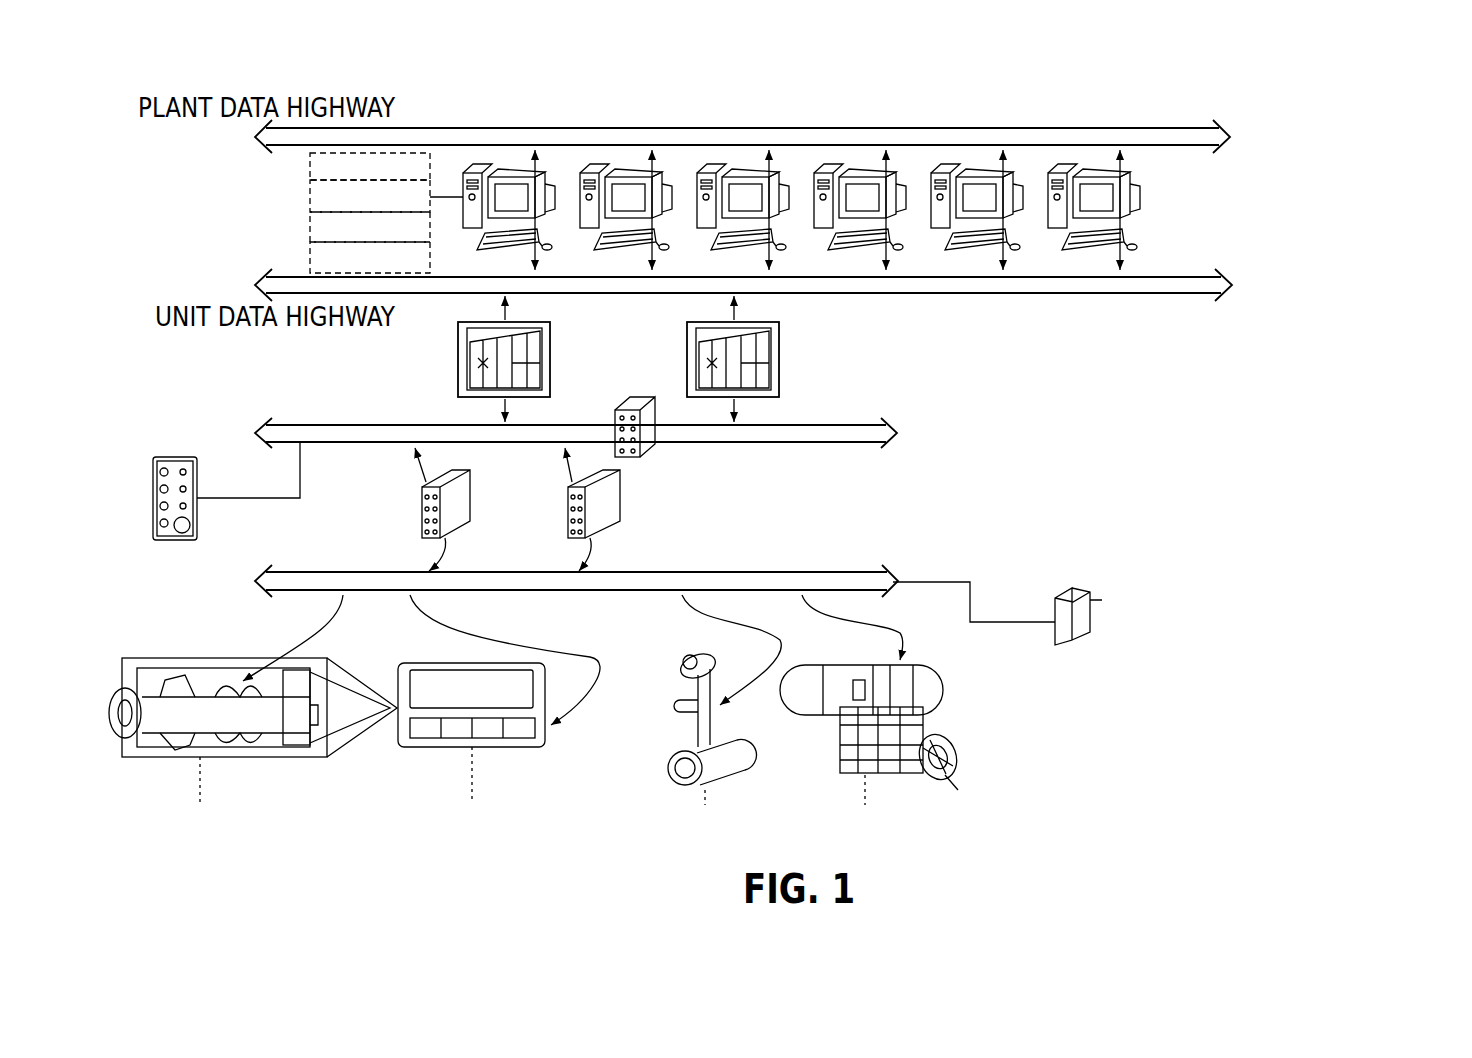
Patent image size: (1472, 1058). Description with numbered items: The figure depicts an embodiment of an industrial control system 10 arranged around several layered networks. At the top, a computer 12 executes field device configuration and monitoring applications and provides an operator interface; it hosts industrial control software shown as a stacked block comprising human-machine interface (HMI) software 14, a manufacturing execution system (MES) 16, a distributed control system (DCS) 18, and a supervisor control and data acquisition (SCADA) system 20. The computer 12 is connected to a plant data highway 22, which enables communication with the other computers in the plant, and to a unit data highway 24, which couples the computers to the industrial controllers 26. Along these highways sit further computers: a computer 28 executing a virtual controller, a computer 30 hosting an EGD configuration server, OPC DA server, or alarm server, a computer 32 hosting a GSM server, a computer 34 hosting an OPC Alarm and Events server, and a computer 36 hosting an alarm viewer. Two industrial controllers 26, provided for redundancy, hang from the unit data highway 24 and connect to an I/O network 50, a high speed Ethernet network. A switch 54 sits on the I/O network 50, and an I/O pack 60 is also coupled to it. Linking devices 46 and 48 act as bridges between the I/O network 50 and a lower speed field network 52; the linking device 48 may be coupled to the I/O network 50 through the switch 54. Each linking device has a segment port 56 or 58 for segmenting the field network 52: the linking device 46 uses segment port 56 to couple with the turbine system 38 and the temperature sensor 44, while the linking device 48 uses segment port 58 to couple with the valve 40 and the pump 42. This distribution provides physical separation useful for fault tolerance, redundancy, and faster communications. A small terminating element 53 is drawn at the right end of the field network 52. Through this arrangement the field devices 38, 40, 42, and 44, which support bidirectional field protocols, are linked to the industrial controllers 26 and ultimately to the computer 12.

The industrial control system 10 is at (1374, 132).
The computer 12 is at (506, 180).
The human-machine interface (HMI) software 14 is at (310, 160).
The manufacturing execution system (MES) 16 is at (310, 191).
The distributed control system (DCS) 18 is at (310, 221).
The supervisor control and data acquisition (SCADA) system 20 is at (310, 251).
The plant data highway 22 is at (1229, 136).
The unit data highway 24 is at (1229, 284).
The industrial controller 26 is at (551, 358).
The computer 28 is at (623, 180).
The computer 30 is at (740, 180).
The computer 32 is at (857, 180).
The computer 34 is at (974, 180).
The computer 36 is at (1091, 180).
The turbine system 38 is at (284, 766).
The valve 40 is at (730, 777).
The pump 42 is at (960, 770).
The temperature sensor 44 is at (500, 748).
The linking device 46 is at (470, 500).
The linking device 48 is at (621, 500).
The I/O network 50 is at (898, 437).
The field network 52 is at (899, 577).
The bus terminator 53 is at (1066, 590).
The switch 54 is at (655, 455).
The segment port 56 is at (412, 540).
The segment port 58 is at (556, 540).
The I/O pack 60 is at (176, 458).